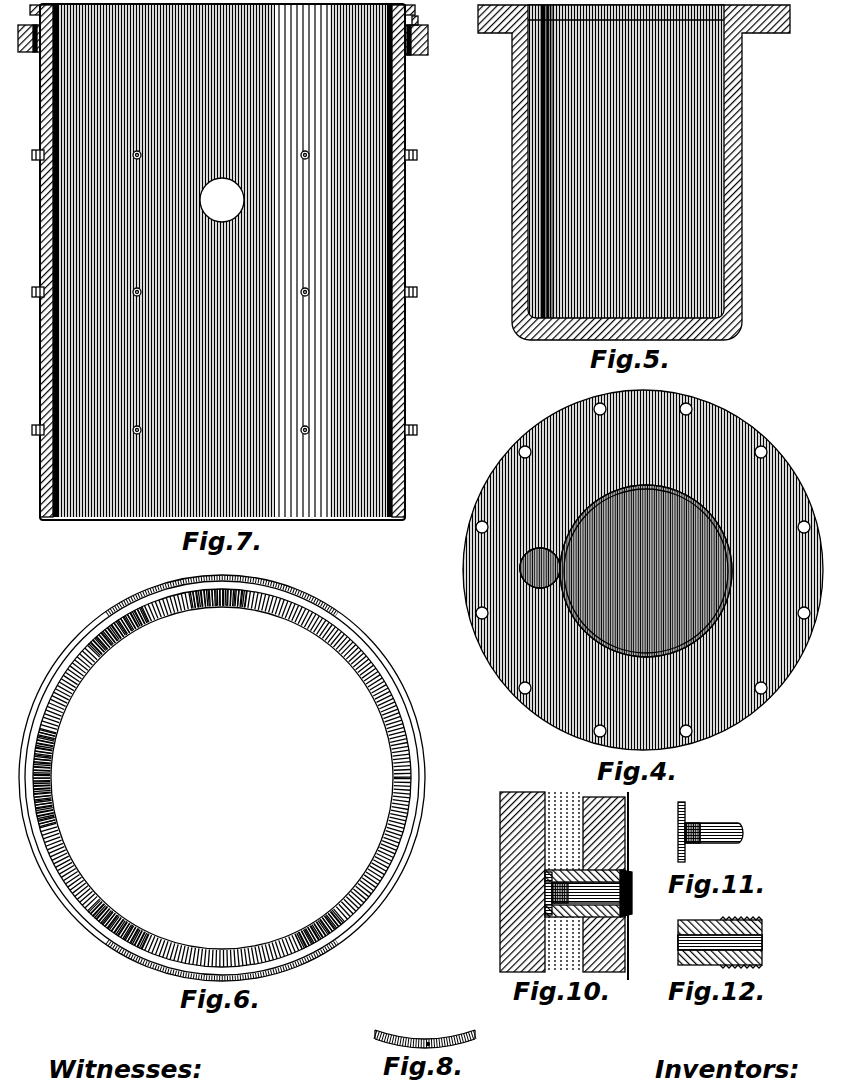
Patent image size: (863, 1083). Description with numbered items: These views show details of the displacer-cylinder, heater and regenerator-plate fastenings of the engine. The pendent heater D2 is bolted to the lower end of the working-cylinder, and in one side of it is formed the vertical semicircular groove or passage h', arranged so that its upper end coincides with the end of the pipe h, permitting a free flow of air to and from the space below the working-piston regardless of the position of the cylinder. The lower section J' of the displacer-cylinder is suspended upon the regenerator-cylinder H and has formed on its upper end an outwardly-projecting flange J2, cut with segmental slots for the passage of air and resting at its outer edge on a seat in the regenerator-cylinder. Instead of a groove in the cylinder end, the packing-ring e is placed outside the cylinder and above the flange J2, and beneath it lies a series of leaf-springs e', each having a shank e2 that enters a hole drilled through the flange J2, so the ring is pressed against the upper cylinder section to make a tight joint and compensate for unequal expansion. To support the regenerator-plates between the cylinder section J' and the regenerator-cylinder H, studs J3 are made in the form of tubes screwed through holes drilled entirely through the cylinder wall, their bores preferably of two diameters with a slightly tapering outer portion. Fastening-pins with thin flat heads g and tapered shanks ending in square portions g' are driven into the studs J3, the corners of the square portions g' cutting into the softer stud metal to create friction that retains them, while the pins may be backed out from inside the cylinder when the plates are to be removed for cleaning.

In FIG. 7, the lower section of the displacer-cylinder J' is at (222, 261).
In FIG. 6, the lower section of the displacer-cylinder J' is at (222, 778).
In FIG. 10, the lower section of the displacer-cylinder J' is at (614, 886).
In FIG. 7, the outwardly-projecting flange J2 is at (231, 49).
In FIG. 6, the outwardly-projecting flange J2 is at (374, 647).
In FIG. 10, the outwardly-projecting flange J2 is at (548, 887).
In FIG. 11, the outwardly-projecting flange J2 is at (710, 832).
In FIG. 7, the tubular studs J3 is at (225, 292).
In FIG. 10, the tubular studs J3 is at (625, 882).
In FIG. 12, the tubular studs J3 is at (727, 942).
In FIG. 7, the packing-ring e is at (222, 8).
In FIG. 6, the packing-ring e is at (264, 763).
In FIG. 7, the leaf-springs e' is at (235, 34).
In FIG. 6, the leaf-springs e' is at (104, 778).
In FIG. 8, the leaf-springs e' is at (425, 1034).
In FIG. 7, the shank e2 is at (430, 27).
In FIG. 8, the shank e2 is at (437, 1032).
In FIG. 7, the pipe h is at (222, 200).
In FIG. 5, the vertical semicircular groove or passage h' is at (547, 161).
In FIG. 4, the vertical semicircular groove or passage h' is at (540, 559).
In FIG. 5, the pendent heater D2 is at (634, 172).
In FIG. 4, the pendent heater D2 is at (643, 570).
In FIG. 10, the regenerator-cylinder H is at (510, 829).
In FIG. 10, the thin flat head g is at (524, 894).
In FIG. 11, the thin flat head g is at (682, 830).
In FIG. 11, the square portion g' is at (718, 841).
In FIG. 10, the tubes t is at (564, 881).